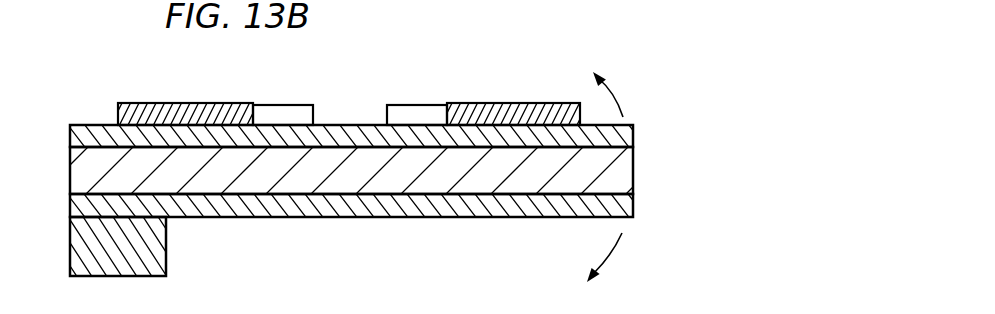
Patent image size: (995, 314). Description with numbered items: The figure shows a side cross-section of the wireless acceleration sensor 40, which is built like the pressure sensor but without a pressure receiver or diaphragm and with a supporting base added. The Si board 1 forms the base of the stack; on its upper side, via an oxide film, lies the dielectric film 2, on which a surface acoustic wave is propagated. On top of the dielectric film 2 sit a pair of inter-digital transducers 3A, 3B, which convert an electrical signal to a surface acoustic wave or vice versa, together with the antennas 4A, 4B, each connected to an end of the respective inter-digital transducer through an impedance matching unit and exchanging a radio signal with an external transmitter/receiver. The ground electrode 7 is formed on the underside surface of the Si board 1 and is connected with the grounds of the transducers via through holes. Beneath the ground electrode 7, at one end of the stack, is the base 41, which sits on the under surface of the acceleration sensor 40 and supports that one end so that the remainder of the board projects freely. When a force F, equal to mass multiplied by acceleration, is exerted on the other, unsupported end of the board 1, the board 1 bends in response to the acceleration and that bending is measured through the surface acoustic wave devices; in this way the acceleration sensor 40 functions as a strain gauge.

The acceleration sensor 40 is at (700, 80).
The Si board 1 is at (633, 172).
The dielectric film 2 is at (633, 130).
The ground electrode 7 is at (633, 208).
The inter-digital transducer 3A is at (292, 113).
The antenna 4A is at (202, 115).
The inter-digital transducer 3B is at (420, 108).
The antenna 4B is at (493, 107).
The base 41 is at (87, 232).
The force F is at (611, 257).